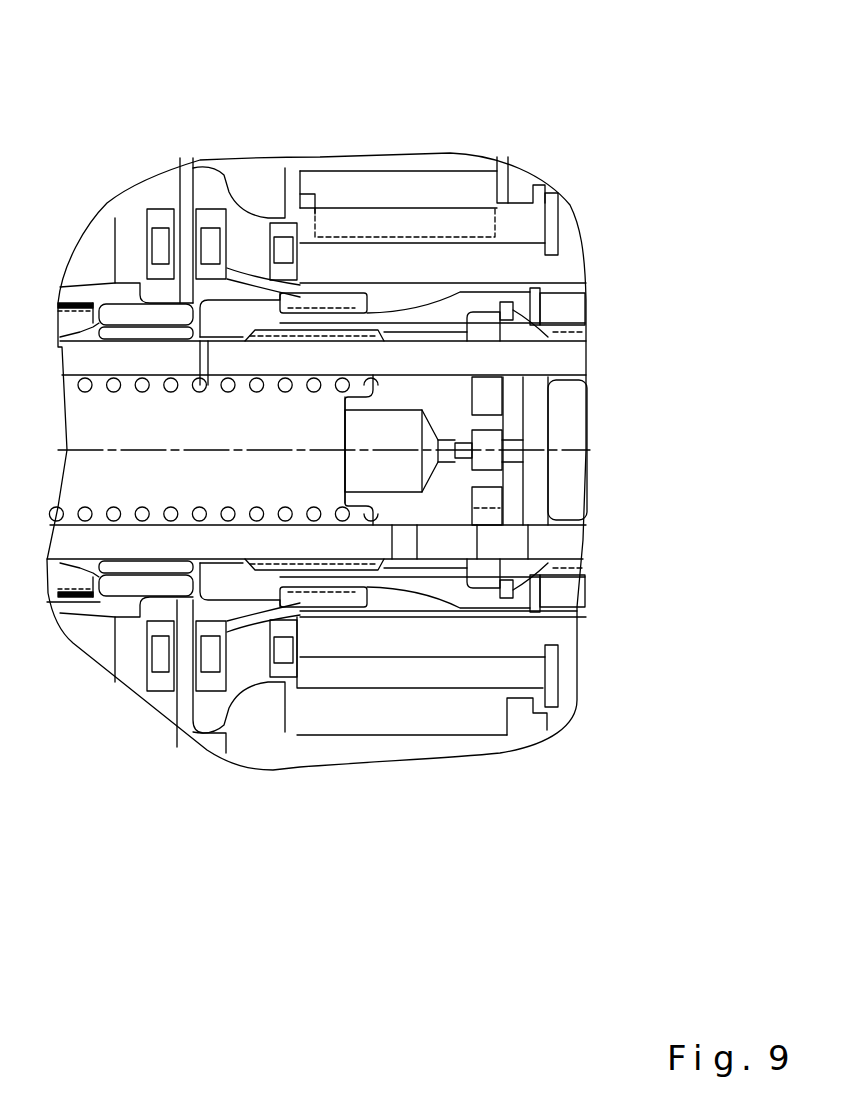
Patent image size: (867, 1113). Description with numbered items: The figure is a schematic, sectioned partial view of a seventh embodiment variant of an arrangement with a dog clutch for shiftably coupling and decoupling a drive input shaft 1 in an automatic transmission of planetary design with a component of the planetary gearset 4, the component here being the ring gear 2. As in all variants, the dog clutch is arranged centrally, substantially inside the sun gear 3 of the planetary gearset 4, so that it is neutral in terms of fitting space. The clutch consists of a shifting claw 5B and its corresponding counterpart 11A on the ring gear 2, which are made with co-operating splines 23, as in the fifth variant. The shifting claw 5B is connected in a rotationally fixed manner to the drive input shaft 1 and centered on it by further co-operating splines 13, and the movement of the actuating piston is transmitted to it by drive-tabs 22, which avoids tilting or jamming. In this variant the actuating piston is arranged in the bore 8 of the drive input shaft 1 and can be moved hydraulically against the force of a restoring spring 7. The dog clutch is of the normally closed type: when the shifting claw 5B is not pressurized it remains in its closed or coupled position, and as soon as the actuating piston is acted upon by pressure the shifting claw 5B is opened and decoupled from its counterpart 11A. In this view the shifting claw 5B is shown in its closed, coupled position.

The drive input shaft 1 is at (545, 356).
The ring gear 2 is at (186, 180).
The sun gear 3 is at (488, 262).
The planetary gearset 4 is at (447, 168).
The shifting claw 5B is at (458, 312).
The restoring spring 7 is at (112, 378).
The bore 8 is at (592, 403).
The counterpart component 11A is at (178, 313).
The spline gearing 13 is at (345, 331).
The drive-tab 22 is at (483, 395).
The spline gearing 23 is at (317, 303).